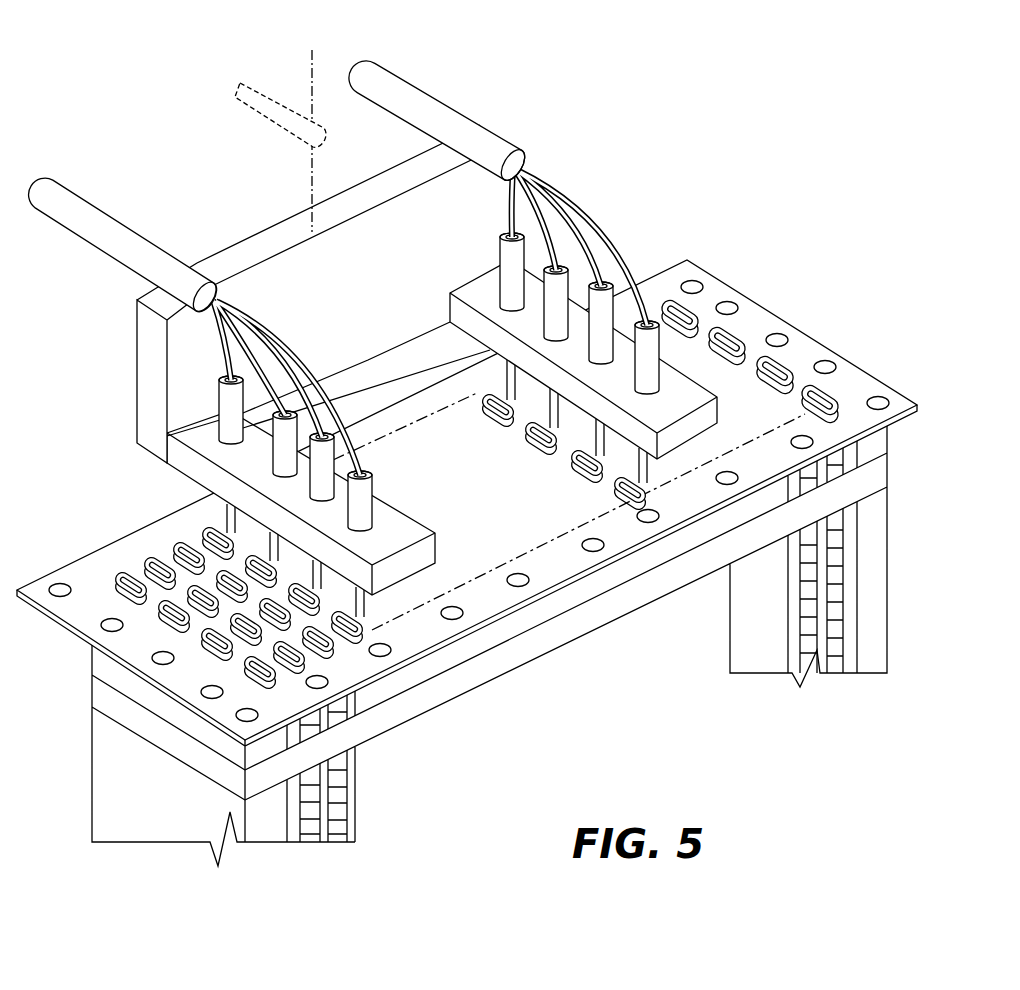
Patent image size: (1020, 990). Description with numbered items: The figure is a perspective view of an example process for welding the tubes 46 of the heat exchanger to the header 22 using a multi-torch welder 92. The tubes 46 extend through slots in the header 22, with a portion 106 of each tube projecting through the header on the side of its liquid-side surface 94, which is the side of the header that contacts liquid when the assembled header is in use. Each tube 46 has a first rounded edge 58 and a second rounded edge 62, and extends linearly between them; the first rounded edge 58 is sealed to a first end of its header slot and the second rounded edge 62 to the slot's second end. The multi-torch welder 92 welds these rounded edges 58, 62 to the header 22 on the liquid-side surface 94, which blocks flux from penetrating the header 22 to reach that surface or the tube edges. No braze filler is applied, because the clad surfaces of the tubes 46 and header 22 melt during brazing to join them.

The header 22 is at (750, 317).
The tubes 46 is at (810, 392).
The first rounded edge 58 is at (322, 690).
The second rounded edge 62 is at (723, 340).
The multi-torch welder 92 is at (150, 383).
The liquid-side surface 94 is at (522, 528).
The portion of the tubes 106 is at (203, 600).